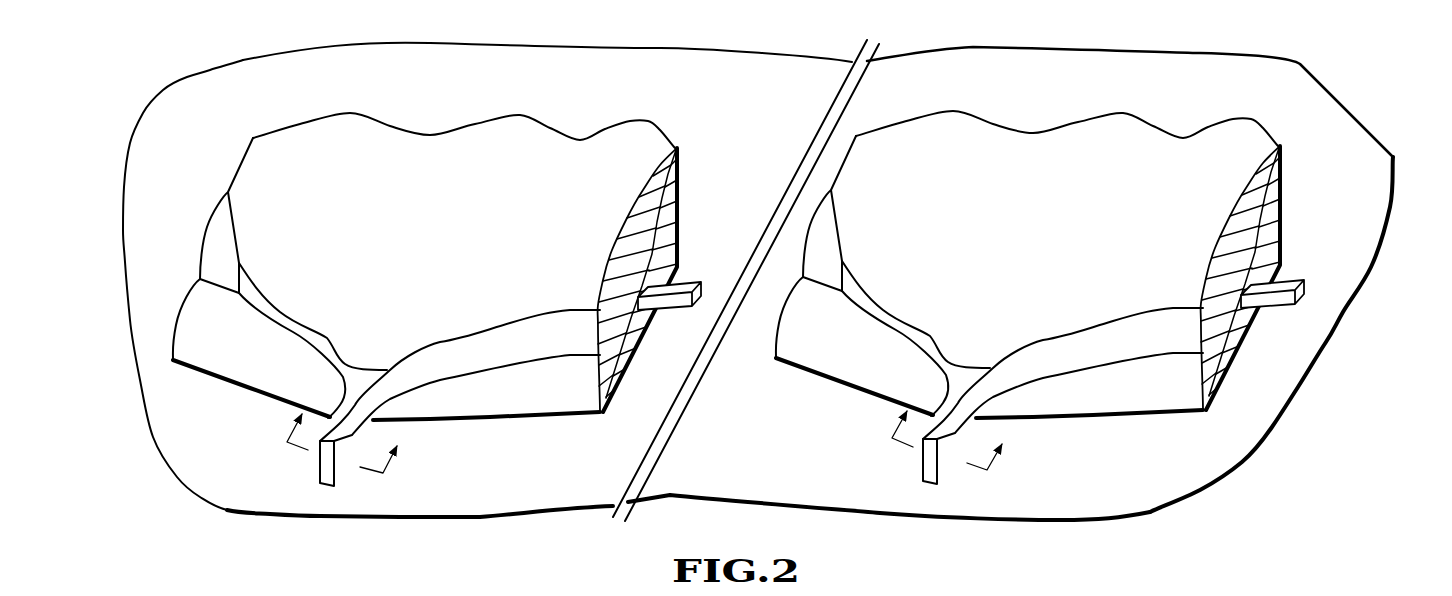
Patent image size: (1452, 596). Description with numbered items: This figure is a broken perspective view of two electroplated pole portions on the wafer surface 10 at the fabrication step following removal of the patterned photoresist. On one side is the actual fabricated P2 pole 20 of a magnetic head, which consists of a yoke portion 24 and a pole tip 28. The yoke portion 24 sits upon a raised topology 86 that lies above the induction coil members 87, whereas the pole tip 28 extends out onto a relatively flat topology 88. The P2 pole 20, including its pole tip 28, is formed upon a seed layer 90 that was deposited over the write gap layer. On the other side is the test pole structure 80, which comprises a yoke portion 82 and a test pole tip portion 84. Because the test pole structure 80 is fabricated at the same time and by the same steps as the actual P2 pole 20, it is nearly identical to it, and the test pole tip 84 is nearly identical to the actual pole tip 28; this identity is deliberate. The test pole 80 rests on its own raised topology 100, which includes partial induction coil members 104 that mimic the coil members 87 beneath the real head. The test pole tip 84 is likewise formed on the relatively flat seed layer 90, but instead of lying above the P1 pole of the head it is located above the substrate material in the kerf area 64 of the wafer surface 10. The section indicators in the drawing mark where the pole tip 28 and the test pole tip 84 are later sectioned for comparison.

The wafer surface 10 is at (758, 293).
The P2 pole 20 is at (1051, 282).
The yoke portion 24 is at (1232, 130).
The pole tip 28 is at (947, 448).
The kerf area 64 is at (198, 90).
The test pole structure 80 is at (454, 287).
The yoke portion 82 is at (310, 137).
The test pole tip portion 84 is at (342, 453).
The raised topology 86 is at (1235, 322).
The induction coil members 87 is at (1288, 280).
The flat topology 88 is at (1117, 453).
The seed layer 90 is at (485, 462).
The raised topology 100 is at (633, 325).
The partial induction coil members 104 is at (683, 282).